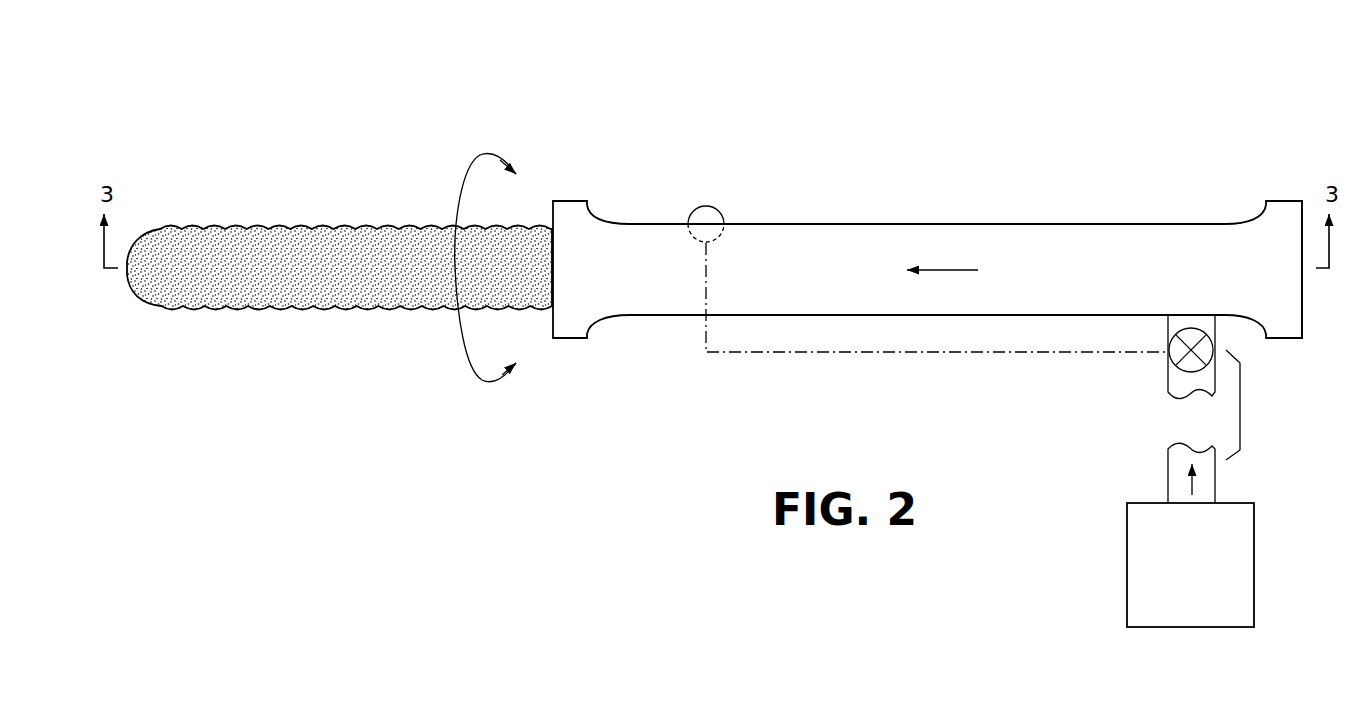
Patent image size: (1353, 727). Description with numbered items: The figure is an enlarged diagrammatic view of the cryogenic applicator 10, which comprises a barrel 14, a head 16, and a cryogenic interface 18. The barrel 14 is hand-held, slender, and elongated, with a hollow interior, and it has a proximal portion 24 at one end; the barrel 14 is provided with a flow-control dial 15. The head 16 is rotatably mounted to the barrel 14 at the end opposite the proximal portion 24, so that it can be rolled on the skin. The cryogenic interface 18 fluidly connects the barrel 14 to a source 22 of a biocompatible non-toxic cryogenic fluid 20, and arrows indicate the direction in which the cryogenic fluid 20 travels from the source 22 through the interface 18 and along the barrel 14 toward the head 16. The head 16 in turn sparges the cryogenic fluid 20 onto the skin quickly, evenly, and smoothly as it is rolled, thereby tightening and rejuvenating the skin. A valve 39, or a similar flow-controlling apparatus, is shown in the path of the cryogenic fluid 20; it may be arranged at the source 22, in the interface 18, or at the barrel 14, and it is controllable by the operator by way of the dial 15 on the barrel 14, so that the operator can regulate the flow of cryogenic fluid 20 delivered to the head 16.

The cryogenic applicator 10 is at (582, 122).
The barrel 14 is at (792, 222).
The flow-control dial 15 is at (697, 207).
The head 16 is at (352, 226).
The cryogenic interface 18 is at (1165, 474).
The cryogenic fluid 20 is at (947, 270).
The source 22 is at (1205, 575).
The proximal portion 24 is at (1128, 222).
The valve 39 is at (1177, 373).